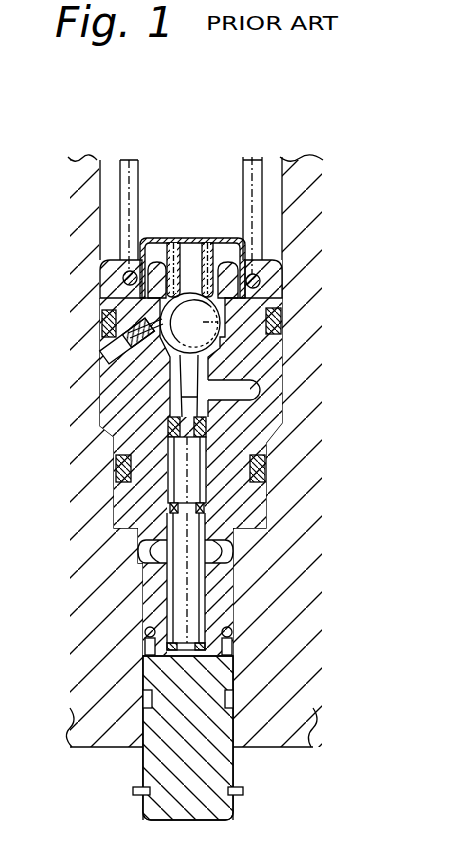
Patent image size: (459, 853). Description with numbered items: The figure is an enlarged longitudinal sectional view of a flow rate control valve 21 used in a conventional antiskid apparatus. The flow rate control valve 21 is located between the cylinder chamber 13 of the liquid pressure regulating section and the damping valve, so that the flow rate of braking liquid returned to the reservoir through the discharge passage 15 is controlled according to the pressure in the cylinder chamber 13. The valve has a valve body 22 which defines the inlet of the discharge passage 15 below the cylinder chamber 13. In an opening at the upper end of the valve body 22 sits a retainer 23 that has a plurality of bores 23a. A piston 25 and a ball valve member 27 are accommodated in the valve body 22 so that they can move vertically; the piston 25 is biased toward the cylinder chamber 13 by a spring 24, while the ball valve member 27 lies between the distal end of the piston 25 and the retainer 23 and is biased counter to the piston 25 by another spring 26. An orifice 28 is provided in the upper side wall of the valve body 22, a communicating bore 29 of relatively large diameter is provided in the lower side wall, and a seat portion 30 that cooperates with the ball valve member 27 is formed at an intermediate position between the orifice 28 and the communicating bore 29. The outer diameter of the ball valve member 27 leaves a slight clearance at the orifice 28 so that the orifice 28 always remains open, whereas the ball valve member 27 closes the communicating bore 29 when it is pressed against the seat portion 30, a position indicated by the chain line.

The cylinder chamber 13 is at (238, 190).
The discharge passage 15 is at (283, 430).
The flow rate control valve 21 is at (285, 365).
The valve body 22 is at (268, 537).
The retainer 23 is at (231, 245).
The bores 23a is at (170, 242).
The spring 24 is at (205, 650).
The piston 25 is at (178, 483).
The spring 26 is at (243, 250).
The ball valve member 27 is at (220, 318).
The orifice 28 is at (107, 353).
The communicating bore 29 is at (283, 397).
The seat portion 30 is at (183, 347).